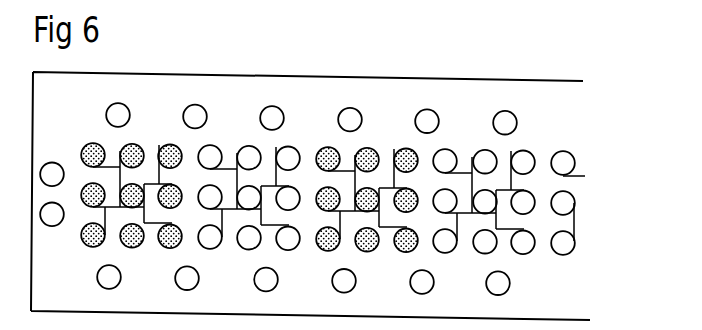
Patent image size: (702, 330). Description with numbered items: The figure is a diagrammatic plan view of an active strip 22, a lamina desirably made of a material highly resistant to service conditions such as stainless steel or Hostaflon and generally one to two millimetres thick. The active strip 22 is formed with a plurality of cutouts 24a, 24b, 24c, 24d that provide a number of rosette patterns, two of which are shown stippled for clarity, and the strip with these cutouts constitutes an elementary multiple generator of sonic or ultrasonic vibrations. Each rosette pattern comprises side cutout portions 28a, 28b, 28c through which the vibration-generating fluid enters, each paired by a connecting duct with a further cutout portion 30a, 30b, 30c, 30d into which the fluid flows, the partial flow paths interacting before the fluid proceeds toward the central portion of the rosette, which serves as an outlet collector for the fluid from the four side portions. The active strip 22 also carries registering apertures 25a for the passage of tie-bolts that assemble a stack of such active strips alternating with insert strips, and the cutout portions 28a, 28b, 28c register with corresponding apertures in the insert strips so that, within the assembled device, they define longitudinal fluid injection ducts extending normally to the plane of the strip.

The active strip 22 is at (485, 90).
The cutout 24a is at (121, 191).
The cutout 24b is at (243, 204).
The cutout 24c is at (357, 208).
The cutout 24d is at (482, 208).
The registering aperture 25a is at (119, 113).
The cutout portion 28a is at (90, 246).
The cutout portion 28b is at (85, 152).
The cutout portion 28c is at (180, 152).
The cutout portion 30a is at (84, 194).
The cutout portion 30b is at (138, 150).
The cutout portion 30c is at (177, 192).
The cutout portion 30d is at (131, 241).